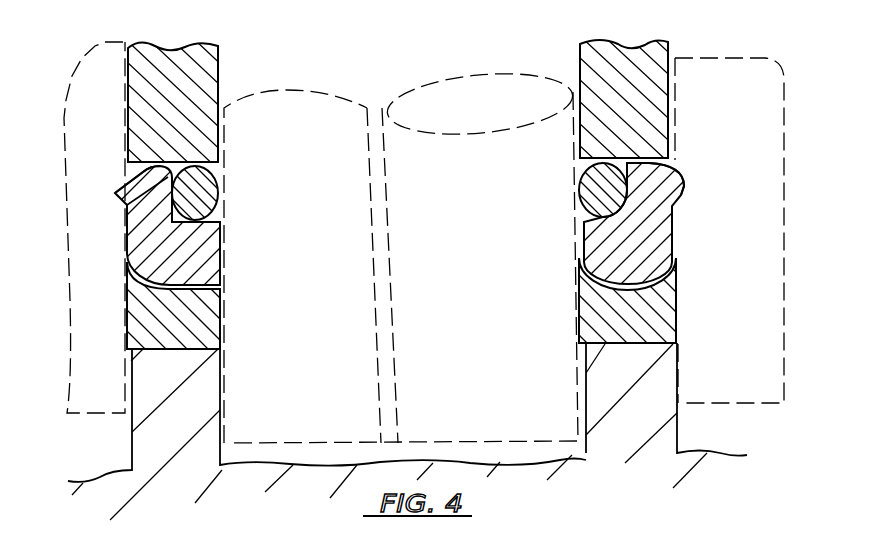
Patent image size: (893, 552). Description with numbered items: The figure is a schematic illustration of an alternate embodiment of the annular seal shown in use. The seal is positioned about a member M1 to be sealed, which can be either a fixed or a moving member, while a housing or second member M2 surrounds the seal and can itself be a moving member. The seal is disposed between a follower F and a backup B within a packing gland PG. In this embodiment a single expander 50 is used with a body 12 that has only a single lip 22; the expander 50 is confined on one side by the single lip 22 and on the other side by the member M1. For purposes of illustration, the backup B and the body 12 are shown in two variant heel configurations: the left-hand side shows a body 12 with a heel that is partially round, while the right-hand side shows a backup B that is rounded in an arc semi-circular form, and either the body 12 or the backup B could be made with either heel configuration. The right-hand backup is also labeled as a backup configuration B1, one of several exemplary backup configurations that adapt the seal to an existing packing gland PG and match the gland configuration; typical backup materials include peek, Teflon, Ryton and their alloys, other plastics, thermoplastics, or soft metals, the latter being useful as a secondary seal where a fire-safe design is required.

The follower F is at (170, 47).
The housing or second member M2 is at (105, 38).
The member to be sealed M1 is at (290, 83).
The packing gland PG is at (132, 168).
The expander 50 is at (217, 173).
The lip 22 is at (143, 200).
The body 12 is at (207, 245).
The backup B is at (167, 349).
The backup configuration B1 is at (676, 315).